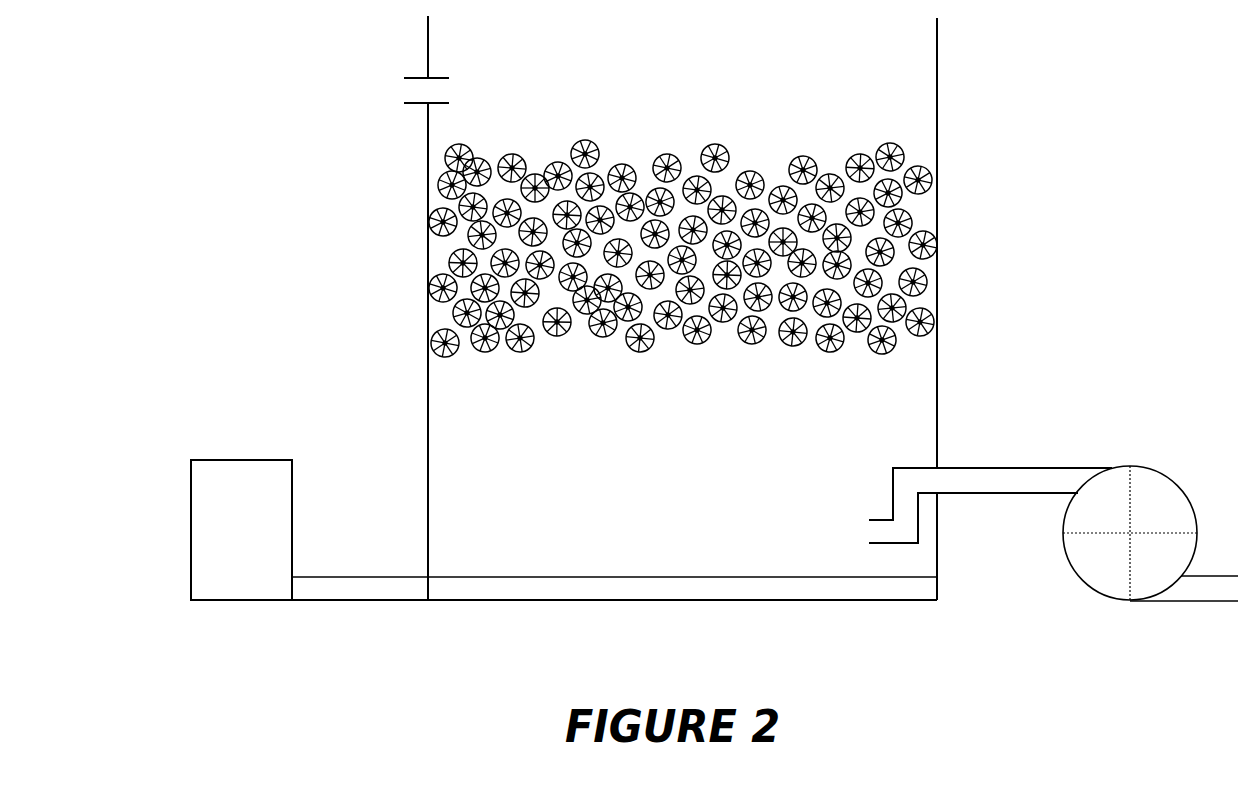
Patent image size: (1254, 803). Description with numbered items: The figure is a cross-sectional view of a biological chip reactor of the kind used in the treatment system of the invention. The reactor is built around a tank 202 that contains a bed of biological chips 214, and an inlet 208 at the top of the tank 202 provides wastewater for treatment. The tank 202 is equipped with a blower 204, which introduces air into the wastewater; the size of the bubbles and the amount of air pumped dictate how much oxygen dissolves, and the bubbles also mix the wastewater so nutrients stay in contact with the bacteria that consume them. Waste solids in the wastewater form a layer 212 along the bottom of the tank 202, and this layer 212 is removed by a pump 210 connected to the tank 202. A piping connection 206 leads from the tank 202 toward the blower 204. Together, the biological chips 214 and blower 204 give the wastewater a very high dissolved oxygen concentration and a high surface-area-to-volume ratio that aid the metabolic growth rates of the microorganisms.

The tank 202 is at (938, 70).
The blower 204 is at (1172, 478).
The outlet pipe 206 is at (873, 545).
The inlet 208 is at (447, 78).
The pump 210 is at (247, 460).
The layer 212 is at (540, 585).
The biological chips 214 is at (636, 352).